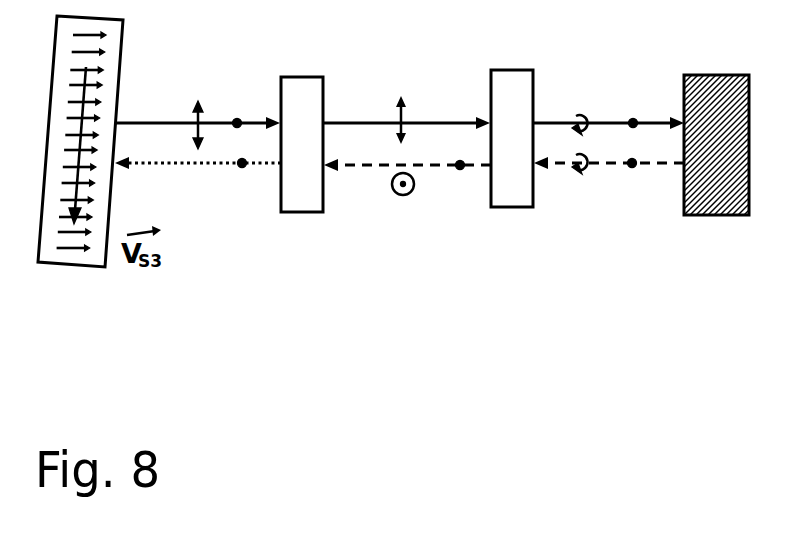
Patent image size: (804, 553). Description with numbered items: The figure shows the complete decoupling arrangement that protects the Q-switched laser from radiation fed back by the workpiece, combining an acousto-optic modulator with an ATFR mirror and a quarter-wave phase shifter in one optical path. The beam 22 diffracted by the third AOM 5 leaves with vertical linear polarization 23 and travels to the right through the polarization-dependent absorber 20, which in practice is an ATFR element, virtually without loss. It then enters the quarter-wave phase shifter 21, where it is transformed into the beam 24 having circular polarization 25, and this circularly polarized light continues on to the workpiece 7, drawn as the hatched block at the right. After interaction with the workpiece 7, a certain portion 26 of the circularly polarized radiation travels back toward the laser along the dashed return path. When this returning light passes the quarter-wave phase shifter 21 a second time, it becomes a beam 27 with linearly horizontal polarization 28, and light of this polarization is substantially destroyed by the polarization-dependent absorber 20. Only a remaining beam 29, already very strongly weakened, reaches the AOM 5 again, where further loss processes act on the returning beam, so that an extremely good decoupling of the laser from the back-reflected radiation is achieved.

The third AOM 5 is at (65, 268).
The workpiece 7 is at (715, 215).
The polarization-dependent absorber 20 is at (300, 212).
The λ/4 phase shifter 21 is at (510, 207).
The beam 22 is at (237, 123).
The vertical linear polarization 23 is at (198, 104).
The beam 24 is at (633, 123).
The circular polarization 25 is at (577, 116).
The portion 26 is at (632, 163).
The beam 27 is at (460, 165).
The linearly horizontal polarization 28 is at (403, 195).
The remaining beam 29 is at (242, 163).